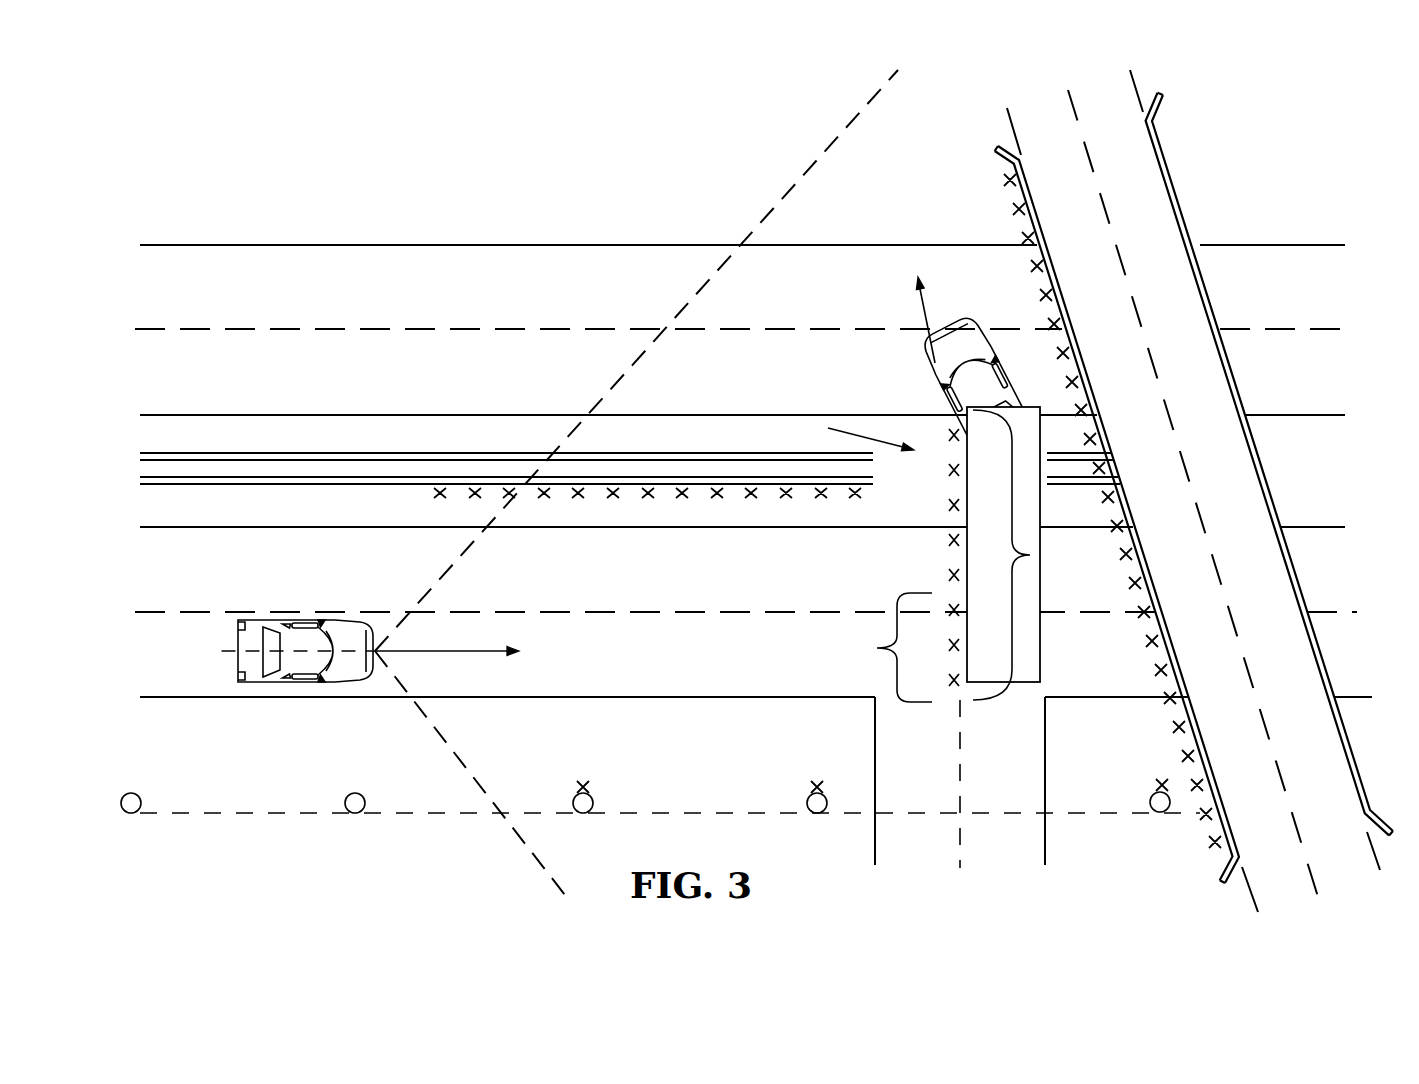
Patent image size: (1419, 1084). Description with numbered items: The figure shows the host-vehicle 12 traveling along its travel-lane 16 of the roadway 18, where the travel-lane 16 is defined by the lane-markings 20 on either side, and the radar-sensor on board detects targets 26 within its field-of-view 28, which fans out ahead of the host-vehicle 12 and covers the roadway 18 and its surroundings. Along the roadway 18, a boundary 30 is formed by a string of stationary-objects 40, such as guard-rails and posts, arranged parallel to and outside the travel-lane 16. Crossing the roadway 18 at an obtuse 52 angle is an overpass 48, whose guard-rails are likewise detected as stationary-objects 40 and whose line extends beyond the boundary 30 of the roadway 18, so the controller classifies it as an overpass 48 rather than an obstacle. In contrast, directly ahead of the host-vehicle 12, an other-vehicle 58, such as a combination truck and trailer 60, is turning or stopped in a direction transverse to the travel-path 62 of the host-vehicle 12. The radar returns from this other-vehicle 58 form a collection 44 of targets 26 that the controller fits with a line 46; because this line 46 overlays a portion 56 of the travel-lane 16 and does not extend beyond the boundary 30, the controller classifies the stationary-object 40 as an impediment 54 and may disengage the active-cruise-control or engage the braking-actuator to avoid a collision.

The host-vehicle 12 is at (302, 619).
The travel-lane 16 is at (208, 680).
The roadway 18 is at (252, 184).
The lane-marking 20 is at (507, 245).
The target 26 is at (1016, 208).
The field-of-view 28 is at (768, 208).
The boundary 30 is at (305, 453).
The stationary-object 40 is at (467, 452).
The collection of targets 44 is at (1028, 254).
The line 46 is at (960, 557).
The overpass 48 is at (1308, 665).
The obtuse angle 52 is at (1236, 345).
The impediment 54 is at (1030, 632).
The portion of the travel-lane 56 is at (890, 647).
The other-vehicle 58 is at (927, 376).
The combination truck and trailer 60 is at (856, 434).
The travel-path 62 is at (468, 651).